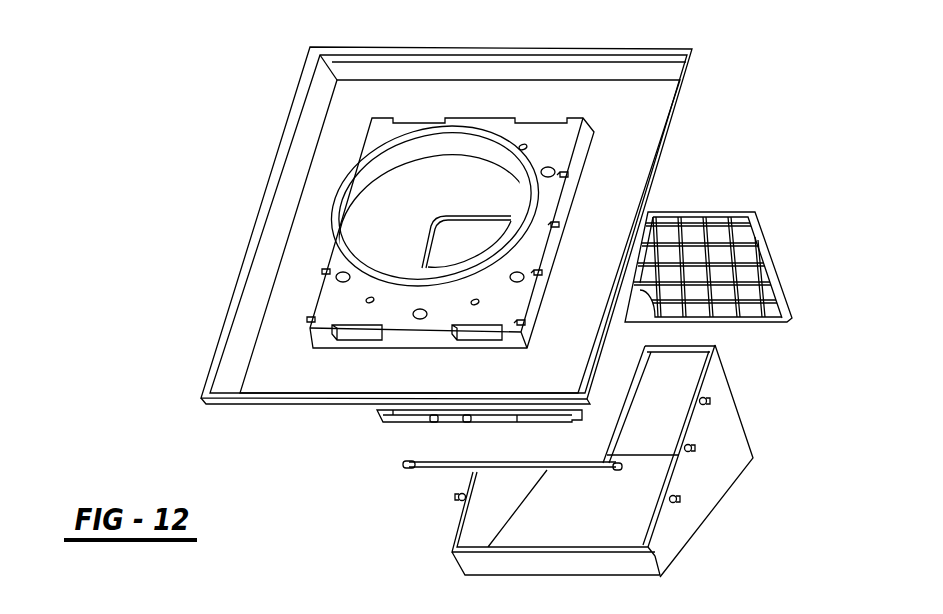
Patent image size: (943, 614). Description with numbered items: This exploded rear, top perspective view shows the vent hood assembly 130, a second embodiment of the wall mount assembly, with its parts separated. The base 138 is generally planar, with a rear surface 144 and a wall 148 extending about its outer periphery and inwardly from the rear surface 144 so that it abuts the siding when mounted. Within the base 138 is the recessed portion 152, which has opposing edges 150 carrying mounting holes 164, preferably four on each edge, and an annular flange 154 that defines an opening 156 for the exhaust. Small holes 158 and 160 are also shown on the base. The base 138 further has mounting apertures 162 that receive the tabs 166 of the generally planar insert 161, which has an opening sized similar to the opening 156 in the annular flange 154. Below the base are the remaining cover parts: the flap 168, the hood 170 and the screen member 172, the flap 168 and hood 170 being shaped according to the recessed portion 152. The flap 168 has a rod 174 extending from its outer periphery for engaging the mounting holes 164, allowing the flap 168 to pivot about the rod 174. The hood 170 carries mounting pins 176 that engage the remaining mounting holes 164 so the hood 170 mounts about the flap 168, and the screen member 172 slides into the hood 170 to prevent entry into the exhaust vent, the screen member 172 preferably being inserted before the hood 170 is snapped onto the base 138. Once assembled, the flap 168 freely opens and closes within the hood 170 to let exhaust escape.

The vent hood assembly 130 is at (278, 505).
The base 138 is at (345, 108).
The rear surface 144 is at (642, 95).
The wall 148 is at (663, 155).
The opposing edges 150 is at (572, 203).
The recessed portion 152 is at (553, 130).
The annular flange 154 is at (350, 210).
The opening 156 is at (377, 200).
The holes 158 is at (343, 272).
The small holes 160 is at (192, 258).
The planar insert 161 is at (465, 418).
The mounting apertures 162 is at (347, 333).
The mounting holes 164 is at (565, 174).
The tabs 166 is at (433, 415).
The flap 168 is at (618, 372).
The hood 170 is at (723, 442).
The screen member 172 is at (760, 243).
The rod 174 is at (614, 468).
The mounting pins 176 is at (676, 498).